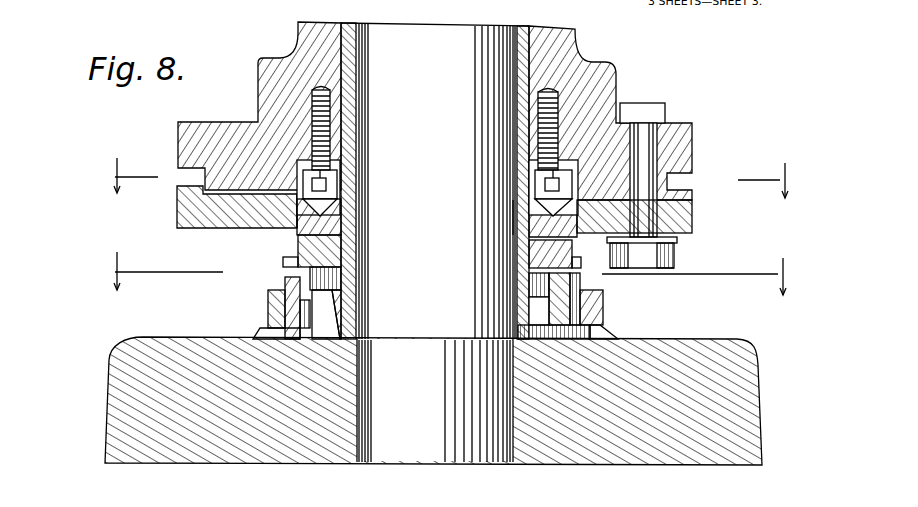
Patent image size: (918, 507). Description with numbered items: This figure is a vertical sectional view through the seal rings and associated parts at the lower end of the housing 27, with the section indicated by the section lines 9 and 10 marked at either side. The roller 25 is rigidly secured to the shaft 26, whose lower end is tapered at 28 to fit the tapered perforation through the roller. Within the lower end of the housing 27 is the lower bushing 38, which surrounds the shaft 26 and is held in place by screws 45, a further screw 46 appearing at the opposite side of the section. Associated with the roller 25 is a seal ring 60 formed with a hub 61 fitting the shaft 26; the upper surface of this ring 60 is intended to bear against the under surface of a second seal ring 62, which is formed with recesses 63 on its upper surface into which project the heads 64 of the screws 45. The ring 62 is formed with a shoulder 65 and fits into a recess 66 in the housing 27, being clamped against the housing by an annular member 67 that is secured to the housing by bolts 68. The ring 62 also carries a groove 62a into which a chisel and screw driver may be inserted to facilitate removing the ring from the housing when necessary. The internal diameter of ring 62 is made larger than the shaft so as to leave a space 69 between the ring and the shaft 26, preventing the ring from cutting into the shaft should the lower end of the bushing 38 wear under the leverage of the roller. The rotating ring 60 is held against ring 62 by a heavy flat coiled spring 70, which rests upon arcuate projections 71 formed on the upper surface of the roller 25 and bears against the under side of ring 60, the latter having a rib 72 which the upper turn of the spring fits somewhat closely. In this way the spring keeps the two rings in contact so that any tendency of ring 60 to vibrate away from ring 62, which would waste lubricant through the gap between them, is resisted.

The section line 9- 9 is at (451, 178).
The section line 10- 10 is at (452, 273).
The roller 25 is at (305, 447).
The shaft 26 is at (458, 55).
The housing 27 is at (574, 50).
The tapered portion 28 is at (428, 427).
The lower bushing 38 is at (510, 32).
The screws 45 is at (331, 131).
The screw 46 is at (538, 170).
The seal ring 60 is at (330, 251).
The hub 61 is at (347, 298).
The seal ring 62 is at (340, 228).
The groove 62a is at (310, 210).
The recesses 63 is at (522, 194).
The heads 64 is at (535, 182).
The shoulder 65 is at (297, 208).
The recess 66 is at (297, 173).
The annular member 67 is at (687, 220).
The bolts 68 is at (655, 164).
The space 69 is at (514, 217).
The coiled spring 70 is at (606, 311).
The arcuate projections 71 is at (600, 336).
The rib 72 is at (293, 270).